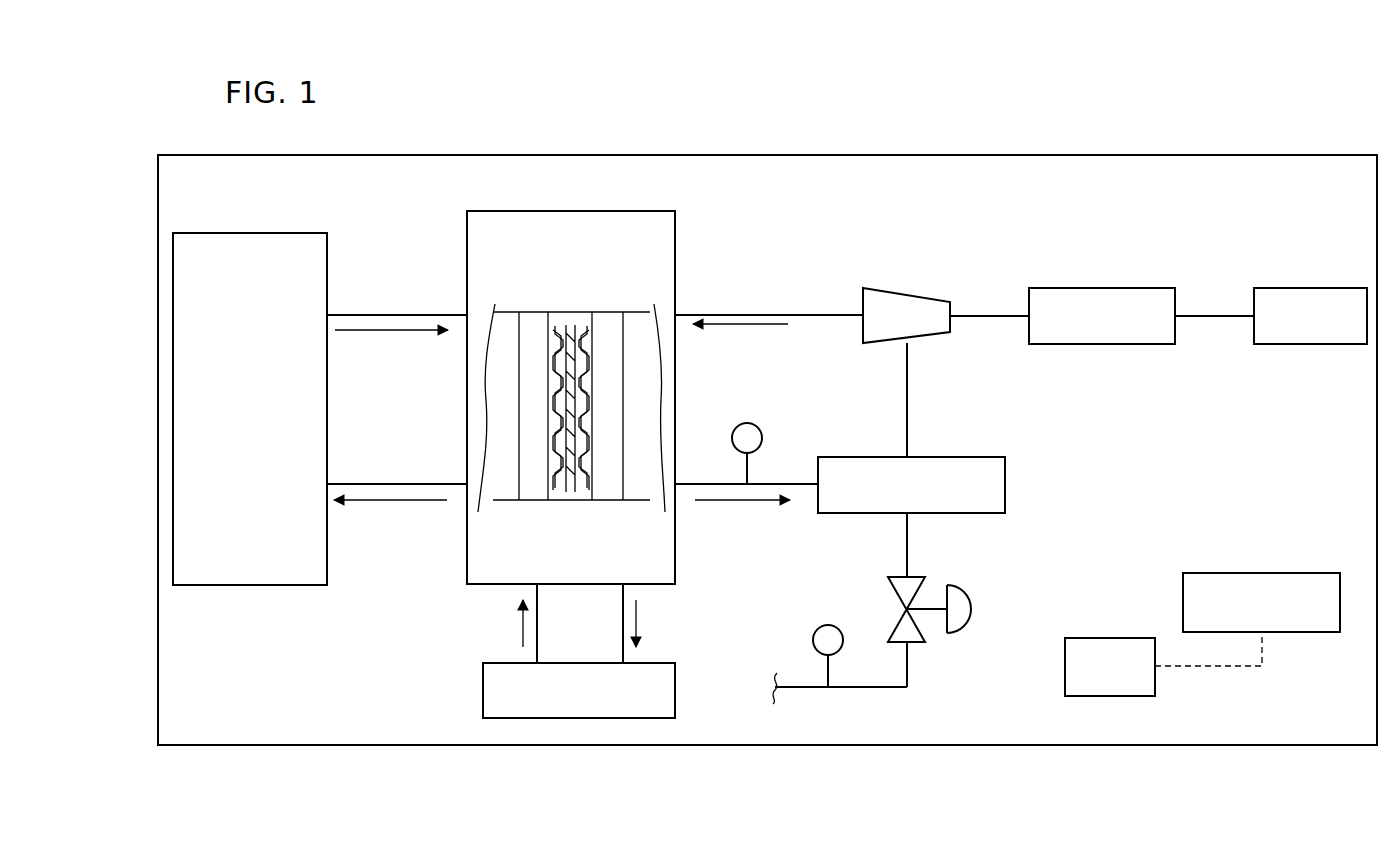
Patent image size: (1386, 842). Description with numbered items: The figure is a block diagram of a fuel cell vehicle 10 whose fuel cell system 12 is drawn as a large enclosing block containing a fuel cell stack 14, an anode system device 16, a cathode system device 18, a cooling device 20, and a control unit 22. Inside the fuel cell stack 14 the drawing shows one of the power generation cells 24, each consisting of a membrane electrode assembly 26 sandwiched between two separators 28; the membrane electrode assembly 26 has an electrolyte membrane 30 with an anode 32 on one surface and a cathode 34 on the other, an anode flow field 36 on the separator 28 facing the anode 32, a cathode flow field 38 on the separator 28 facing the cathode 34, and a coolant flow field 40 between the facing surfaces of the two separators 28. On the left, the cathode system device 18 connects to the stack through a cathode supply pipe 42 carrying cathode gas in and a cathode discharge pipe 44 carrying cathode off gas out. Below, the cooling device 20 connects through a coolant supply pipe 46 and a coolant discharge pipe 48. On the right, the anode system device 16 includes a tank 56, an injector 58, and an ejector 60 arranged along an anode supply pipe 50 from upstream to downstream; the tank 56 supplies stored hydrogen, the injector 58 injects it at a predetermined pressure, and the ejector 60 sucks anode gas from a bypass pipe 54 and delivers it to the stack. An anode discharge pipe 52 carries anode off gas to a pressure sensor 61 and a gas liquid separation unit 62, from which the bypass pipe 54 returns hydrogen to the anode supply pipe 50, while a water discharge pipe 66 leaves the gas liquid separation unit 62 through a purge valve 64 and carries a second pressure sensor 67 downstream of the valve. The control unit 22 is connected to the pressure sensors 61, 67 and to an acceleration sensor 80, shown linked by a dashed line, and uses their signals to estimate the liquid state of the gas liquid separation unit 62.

The fuel cell vehicle 10 is at (850, 146).
The fuel cell system 12 is at (738, 192).
The fuel cell stack 14 is at (538, 211).
The anode system device 16 is at (1027, 254).
The cathode system device 18 is at (246, 233).
The cooling device 20 is at (483, 692).
The control unit 22 is at (1128, 638).
The power generation cell 24 is at (568, 322).
The membrane electrode assembly 26 is at (622, 545).
The separator 28 is at (592, 357).
The electrolyte membrane 30 is at (571, 490).
The anode 32 is at (562, 490).
The cathode 34 is at (580, 490).
The anode flow field 36 is at (552, 410).
The cathode flow field 38 is at (588, 408).
The coolant flow field 40 is at (558, 430).
The cathode supply pipe 42 is at (433, 315).
The cathode discharge pipe 44 is at (365, 484).
The coolant supply pipe 46 is at (538, 630).
The coolant discharge pipe 48 is at (624, 600).
The anode supply pipe 50 is at (753, 315).
The anode discharge pipe 52 is at (695, 484).
The bypass pipe 54 is at (908, 393).
The tank 56 is at (1312, 288).
The injector 58 is at (1121, 288).
The ejector 60 is at (903, 292).
The pressure sensor 61 is at (752, 425).
The gas liquid separation unit 62 is at (1000, 450).
The purge valve 64 is at (962, 588).
The water discharge pipe 66 is at (861, 688).
The pressure sensor 67 is at (838, 628).
The acceleration sensor 80 is at (1266, 573).